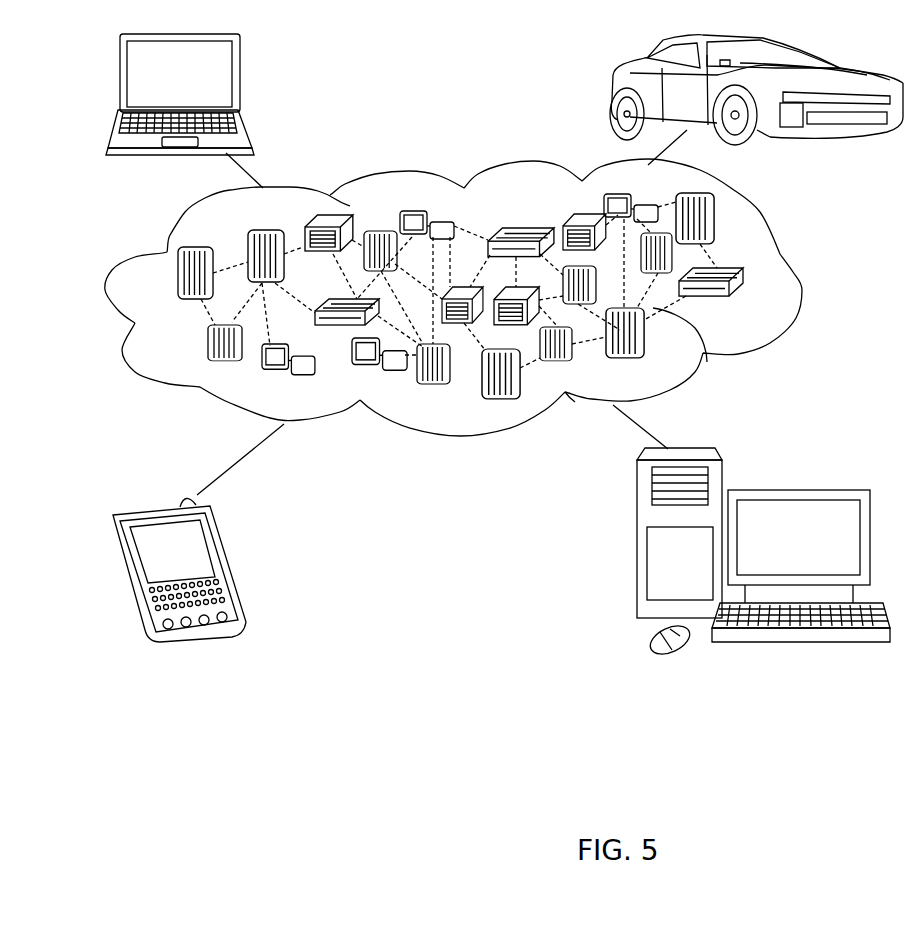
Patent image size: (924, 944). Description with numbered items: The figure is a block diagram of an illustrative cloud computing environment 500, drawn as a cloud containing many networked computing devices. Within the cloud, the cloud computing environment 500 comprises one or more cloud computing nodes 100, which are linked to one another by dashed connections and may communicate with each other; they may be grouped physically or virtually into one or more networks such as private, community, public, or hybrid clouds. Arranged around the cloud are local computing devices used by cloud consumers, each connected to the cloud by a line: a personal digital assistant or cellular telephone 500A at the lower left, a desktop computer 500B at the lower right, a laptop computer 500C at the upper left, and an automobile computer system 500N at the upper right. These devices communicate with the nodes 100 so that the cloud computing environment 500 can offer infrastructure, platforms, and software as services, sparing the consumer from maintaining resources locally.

The laptop computer 500C is at (241, 80).
The automobile computer system 500N is at (611, 97).
The personal digital assistant (PDA) or cellular telephone 500A is at (230, 557).
The desktop computer 500B is at (799, 490).
The cloud computing environment 500 is at (798, 281).
The cloud computing nodes 100 is at (752, 303).